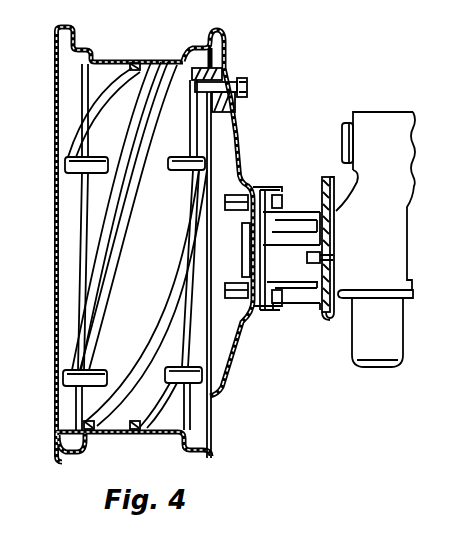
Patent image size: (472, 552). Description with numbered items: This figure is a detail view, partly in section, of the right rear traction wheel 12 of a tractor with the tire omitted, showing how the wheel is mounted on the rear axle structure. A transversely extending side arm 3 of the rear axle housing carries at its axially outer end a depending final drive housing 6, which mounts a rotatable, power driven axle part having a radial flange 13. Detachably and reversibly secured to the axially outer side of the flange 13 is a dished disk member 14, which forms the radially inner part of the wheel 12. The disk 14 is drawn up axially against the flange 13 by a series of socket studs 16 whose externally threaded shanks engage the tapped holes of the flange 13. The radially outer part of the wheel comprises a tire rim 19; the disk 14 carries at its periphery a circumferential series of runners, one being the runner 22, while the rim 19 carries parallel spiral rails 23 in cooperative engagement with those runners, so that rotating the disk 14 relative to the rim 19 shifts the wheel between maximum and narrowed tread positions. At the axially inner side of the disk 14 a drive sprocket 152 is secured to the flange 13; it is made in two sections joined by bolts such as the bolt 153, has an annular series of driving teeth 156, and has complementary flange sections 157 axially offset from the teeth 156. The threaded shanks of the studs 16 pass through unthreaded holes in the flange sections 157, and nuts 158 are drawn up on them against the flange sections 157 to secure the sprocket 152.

The side arm 3 is at (413, 112).
The final drive housing 6 is at (352, 348).
The rear wheel 12 is at (137, 123).
The radial flange 13 is at (258, 190).
The dished disk member 14 is at (244, 140).
The socket stud 16 is at (230, 212).
The tire rim 19 is at (120, 435).
The runner 22 is at (226, 70).
The spiral rail 23 is at (158, 313).
The drive sprocket 152 is at (334, 257).
The bolt 153 is at (306, 258).
The driving teeth 156 is at (314, 328).
The flange section 157 is at (278, 178).
The nut 158 is at (276, 194).